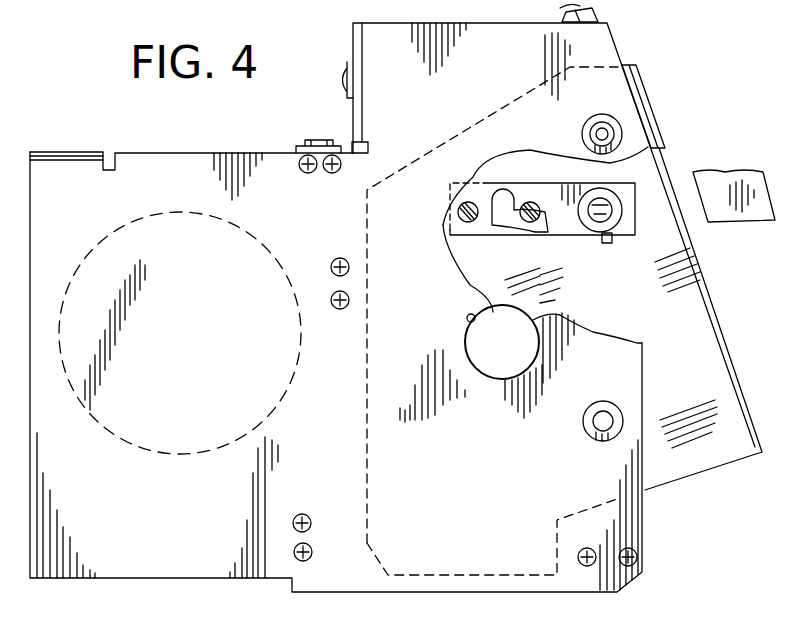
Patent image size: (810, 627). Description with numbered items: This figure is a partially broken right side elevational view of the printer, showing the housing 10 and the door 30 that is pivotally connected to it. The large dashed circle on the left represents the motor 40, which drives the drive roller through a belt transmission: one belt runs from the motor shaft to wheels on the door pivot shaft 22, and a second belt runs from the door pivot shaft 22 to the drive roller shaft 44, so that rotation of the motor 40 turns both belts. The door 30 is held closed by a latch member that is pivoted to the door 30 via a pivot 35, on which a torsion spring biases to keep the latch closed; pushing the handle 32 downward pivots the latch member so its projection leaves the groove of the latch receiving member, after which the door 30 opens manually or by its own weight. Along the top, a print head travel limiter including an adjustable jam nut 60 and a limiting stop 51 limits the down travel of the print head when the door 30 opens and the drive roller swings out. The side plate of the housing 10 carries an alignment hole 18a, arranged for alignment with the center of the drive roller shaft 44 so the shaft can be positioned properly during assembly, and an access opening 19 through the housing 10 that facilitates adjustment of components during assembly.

The housing 10 is at (68, 142).
The alignment hole 18a is at (581, 134).
The access opening 19 is at (467, 314).
The door pivot shaft 22 is at (583, 424).
The door 30 is at (718, 470).
The handle 32 is at (737, 160).
The pivot 35 is at (605, 244).
The motor 40 is at (158, 208).
The drive roller shaft 44 is at (620, 127).
The limiting stop 51 is at (602, 16).
The adjustable jam nut 60 is at (559, 10).